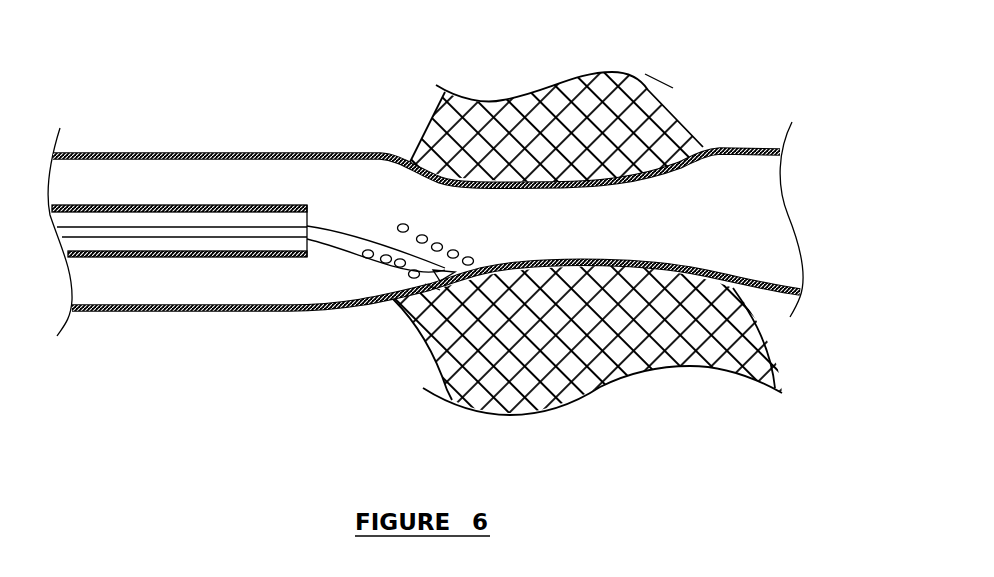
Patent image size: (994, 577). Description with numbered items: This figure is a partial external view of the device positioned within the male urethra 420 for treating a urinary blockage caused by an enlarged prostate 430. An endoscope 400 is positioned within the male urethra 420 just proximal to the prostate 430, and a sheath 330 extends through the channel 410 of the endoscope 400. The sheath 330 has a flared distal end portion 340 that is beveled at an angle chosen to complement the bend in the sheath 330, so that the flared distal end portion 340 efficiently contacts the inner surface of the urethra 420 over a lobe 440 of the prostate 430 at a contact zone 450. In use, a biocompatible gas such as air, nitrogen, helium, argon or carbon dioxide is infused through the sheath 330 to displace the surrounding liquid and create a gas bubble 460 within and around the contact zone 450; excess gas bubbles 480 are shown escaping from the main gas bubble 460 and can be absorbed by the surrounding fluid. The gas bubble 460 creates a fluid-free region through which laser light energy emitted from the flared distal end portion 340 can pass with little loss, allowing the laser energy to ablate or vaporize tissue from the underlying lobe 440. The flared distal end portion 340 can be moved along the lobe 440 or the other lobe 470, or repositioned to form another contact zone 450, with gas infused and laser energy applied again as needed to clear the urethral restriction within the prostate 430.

The sheath 330 is at (363, 233).
The flared distal end portion 340 is at (440, 263).
The endoscope 400 is at (200, 257).
The channel 410 is at (307, 245).
The male urethra 420 is at (168, 155).
The prostate 430 is at (697, 127).
The lobe 440 is at (683, 292).
The contact zone 450 is at (437, 265).
The gas bubble 460 is at (432, 287).
The lobe 470 is at (513, 150).
The excess gas bubbles 480 is at (386, 262).